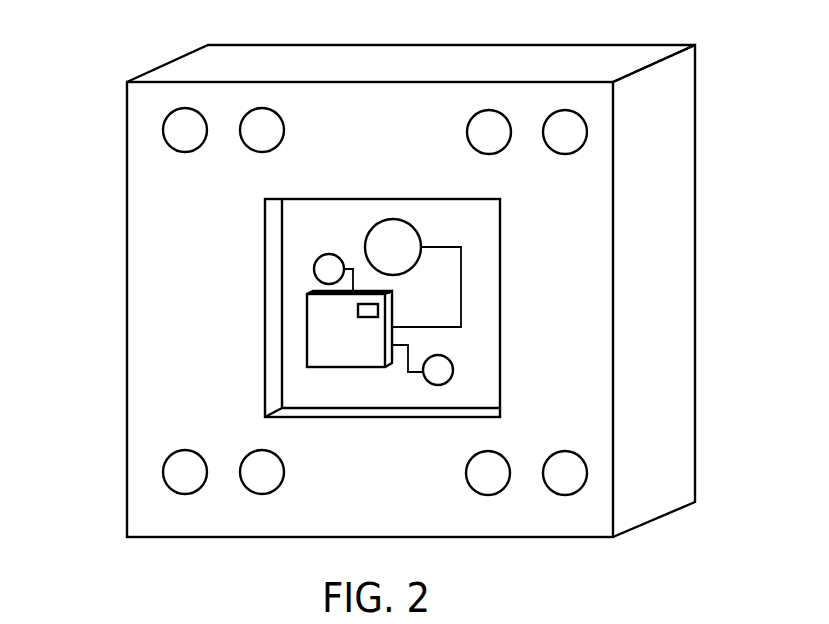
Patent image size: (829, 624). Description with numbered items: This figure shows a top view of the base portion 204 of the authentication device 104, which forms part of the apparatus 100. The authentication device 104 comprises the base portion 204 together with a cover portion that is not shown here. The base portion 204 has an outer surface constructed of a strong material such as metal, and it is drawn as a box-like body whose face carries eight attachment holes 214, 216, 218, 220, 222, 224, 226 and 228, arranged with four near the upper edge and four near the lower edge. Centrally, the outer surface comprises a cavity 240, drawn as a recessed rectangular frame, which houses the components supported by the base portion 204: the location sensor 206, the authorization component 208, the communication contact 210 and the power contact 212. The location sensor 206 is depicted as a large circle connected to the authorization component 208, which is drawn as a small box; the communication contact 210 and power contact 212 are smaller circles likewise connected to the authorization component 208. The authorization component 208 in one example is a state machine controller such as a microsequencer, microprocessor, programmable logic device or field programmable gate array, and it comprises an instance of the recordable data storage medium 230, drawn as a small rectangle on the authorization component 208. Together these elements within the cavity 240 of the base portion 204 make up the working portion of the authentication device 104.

The sensor system 100 is at (392, 270).
The authentication device 104 is at (93, 208).
The base portion 204 is at (697, 190).
The location sensor 206 is at (410, 224).
The authorization component 208 is at (353, 356).
The communication contact 210 is at (313, 268).
The power contact 212 is at (453, 366).
The attachment hole 214 is at (284, 130).
The attachment hole 216 is at (467, 133).
The attachment hole 218 is at (262, 494).
The attachment hole 220 is at (488, 495).
The attachment hole 222 is at (185, 152).
The attachment hole 224 is at (565, 154).
The attachment hole 226 is at (185, 494).
The attachment hole 228 is at (565, 495).
The recordable data storage medium 230 is at (378, 310).
The cavity 240 is at (295, 383).